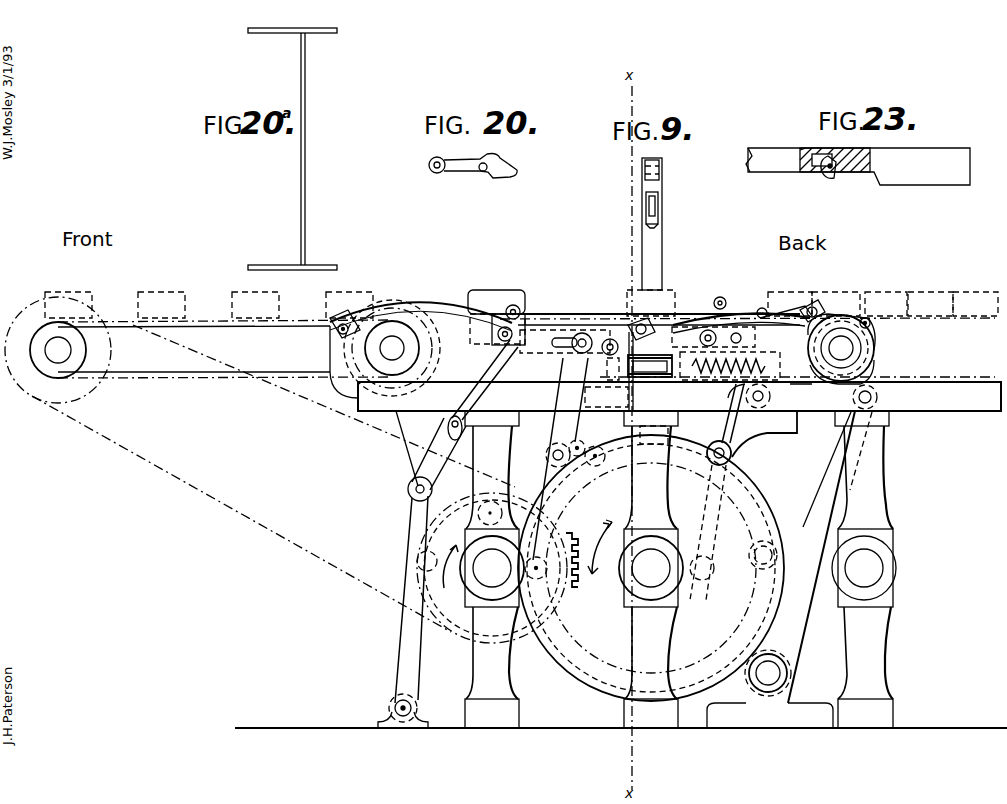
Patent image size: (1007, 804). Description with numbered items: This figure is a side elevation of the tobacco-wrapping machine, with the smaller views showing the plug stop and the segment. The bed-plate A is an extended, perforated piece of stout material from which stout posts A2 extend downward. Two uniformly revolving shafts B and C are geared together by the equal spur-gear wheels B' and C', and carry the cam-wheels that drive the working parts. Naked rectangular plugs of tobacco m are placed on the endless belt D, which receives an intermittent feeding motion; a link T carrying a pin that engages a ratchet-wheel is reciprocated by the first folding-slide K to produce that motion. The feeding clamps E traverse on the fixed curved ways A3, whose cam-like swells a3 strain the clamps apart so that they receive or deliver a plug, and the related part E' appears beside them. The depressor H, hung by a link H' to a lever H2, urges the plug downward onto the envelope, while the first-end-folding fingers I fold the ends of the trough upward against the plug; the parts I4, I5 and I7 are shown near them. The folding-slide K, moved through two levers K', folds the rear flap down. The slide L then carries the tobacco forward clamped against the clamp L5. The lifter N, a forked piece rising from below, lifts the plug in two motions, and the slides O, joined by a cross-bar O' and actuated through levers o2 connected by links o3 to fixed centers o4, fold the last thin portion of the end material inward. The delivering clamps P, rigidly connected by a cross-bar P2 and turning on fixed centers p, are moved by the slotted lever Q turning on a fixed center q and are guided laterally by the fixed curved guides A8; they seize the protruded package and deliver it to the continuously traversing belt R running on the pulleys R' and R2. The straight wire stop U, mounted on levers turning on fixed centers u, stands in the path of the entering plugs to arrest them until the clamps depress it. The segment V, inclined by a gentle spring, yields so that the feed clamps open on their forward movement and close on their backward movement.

In FIG. 9, the bed-plate A is at (679, 396).
In FIG. 9, the posts A2 is at (680, 569).
In FIG. 23, the fixed curved ways A3 is at (819, 167).
In FIG. 9, the fixed curved ways A3 is at (742, 309).
In FIG. 9, the fixed curved guides A8 is at (418, 310).
In FIG. 9, the shaft B is at (651, 568).
In FIG. 9, the spur-gear wheel B' is at (543, 568).
In FIG. 9, the shaft C is at (492, 568).
In FIG. 9, the spur-gear wheel C' is at (578, 560).
In FIG. 9, the endless belt D is at (747, 347).
In FIG. 9, the feeding clamps E is at (812, 307).
In FIG. 9, the lever E' is at (648, 328).
In FIG. 9, the depressor H is at (663, 224).
In FIG. 9, the link H' is at (675, 189).
In FIG. 9, the lever H2 is at (672, 266).
In FIG. 9, the first-end-folding fingers I is at (650, 371).
In FIG. 9, the slide guide I4 is at (606, 397).
In FIG. 9, the spring I5 is at (730, 366).
In FIG. 9, the bearing I7 is at (802, 396).
In FIG. 9, the first folding-slide K is at (713, 385).
In FIG. 9, the levers K' is at (752, 438).
In FIG. 9, the slide L is at (780, 530).
In FIG. 9, the clamp L5 is at (606, 369).
In FIG. 9, the lifter N is at (537, 459).
In FIG. 9, the slide O is at (659, 334).
In FIG. 9, the cross-bar O' is at (582, 387).
In FIG. 9, the levers o2 is at (558, 443).
In FIG. 9, the links o3 is at (579, 441).
In FIG. 9, the fixed centers o4 is at (605, 456).
In FIG. 9, the delivering-clamps P is at (520, 306).
In FIG. 9, the cross-bar P2 is at (465, 415).
In FIG. 9, the fixed centers p is at (414, 456).
In FIG. 9, the lever Q is at (411, 599).
In FIG. 9, the fixed center q is at (403, 707).
In FIG. 9, the belt R is at (273, 468).
In FIG. 9, the pulley R' is at (58, 350).
In FIG. 9, the pulley R2 is at (392, 348).
In FIG. 9, the link T is at (870, 325).
In FIG. 20A, the stop wire U is at (299, 34).
In FIG. 20, the segment V is at (483, 172).
In FIG. 23, the segment V is at (829, 177).
In FIG. 9, the segment V is at (764, 308).
In FIG. 23, the swells a3 is at (858, 166).
In FIG. 9, the swells a3 is at (667, 335).
In FIG. 9, the plugs of tobacco m is at (521, 304).
In FIG. 9, the fixed centers u is at (722, 297).